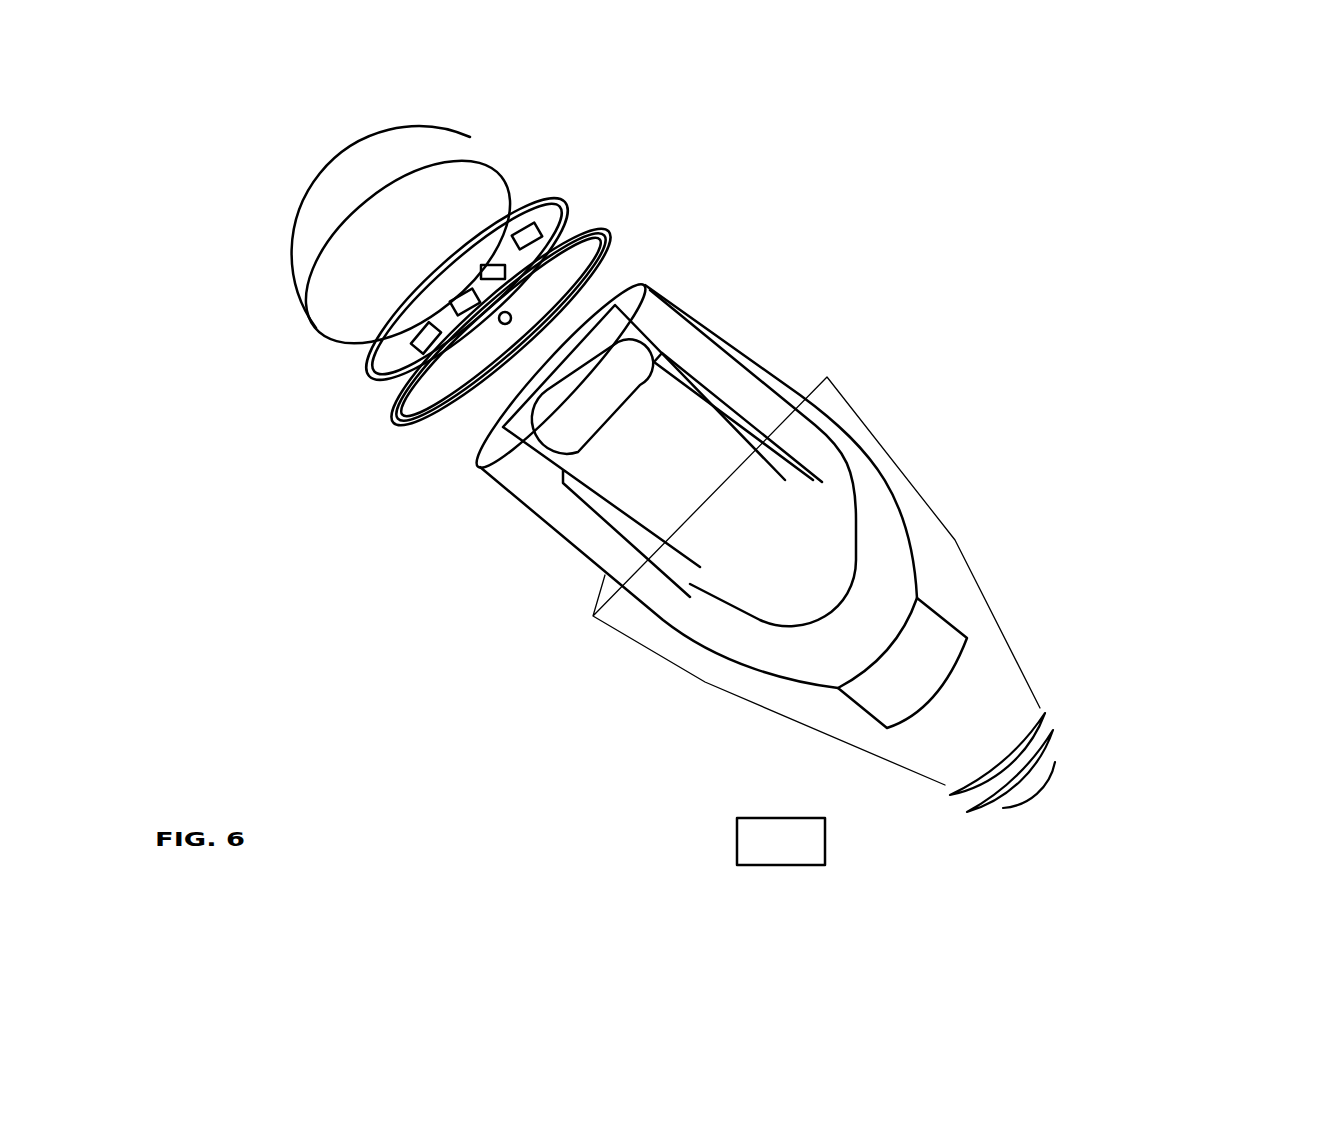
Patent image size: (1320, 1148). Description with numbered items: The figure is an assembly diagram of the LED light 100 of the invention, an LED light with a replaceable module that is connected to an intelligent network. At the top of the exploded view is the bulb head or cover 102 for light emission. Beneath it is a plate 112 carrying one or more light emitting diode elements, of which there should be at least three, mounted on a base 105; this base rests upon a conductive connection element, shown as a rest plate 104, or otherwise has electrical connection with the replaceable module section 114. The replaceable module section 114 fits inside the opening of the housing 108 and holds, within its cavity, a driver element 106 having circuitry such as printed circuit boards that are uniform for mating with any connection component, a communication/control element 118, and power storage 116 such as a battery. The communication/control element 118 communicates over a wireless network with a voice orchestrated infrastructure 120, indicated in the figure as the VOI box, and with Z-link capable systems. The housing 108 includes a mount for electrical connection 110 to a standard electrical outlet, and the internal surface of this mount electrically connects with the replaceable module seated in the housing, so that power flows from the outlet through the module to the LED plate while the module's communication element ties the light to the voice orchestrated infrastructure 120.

The LED light 100 is at (323, 160).
The bulb head or cover 102 is at (422, 142).
The rest plate 104 is at (442, 378).
The base 105 is at (571, 213).
The driver element 106 is at (613, 330).
The housing 108 is at (918, 535).
The electrical connection 110 is at (1118, 683).
The plate with LED elements 112 is at (405, 355).
The replaceable module section 114 is at (480, 470).
The power storage 116 is at (600, 387).
The communication/control element 118 is at (765, 558).
The voice orchestrated infrastructure 120 is at (647, 830).